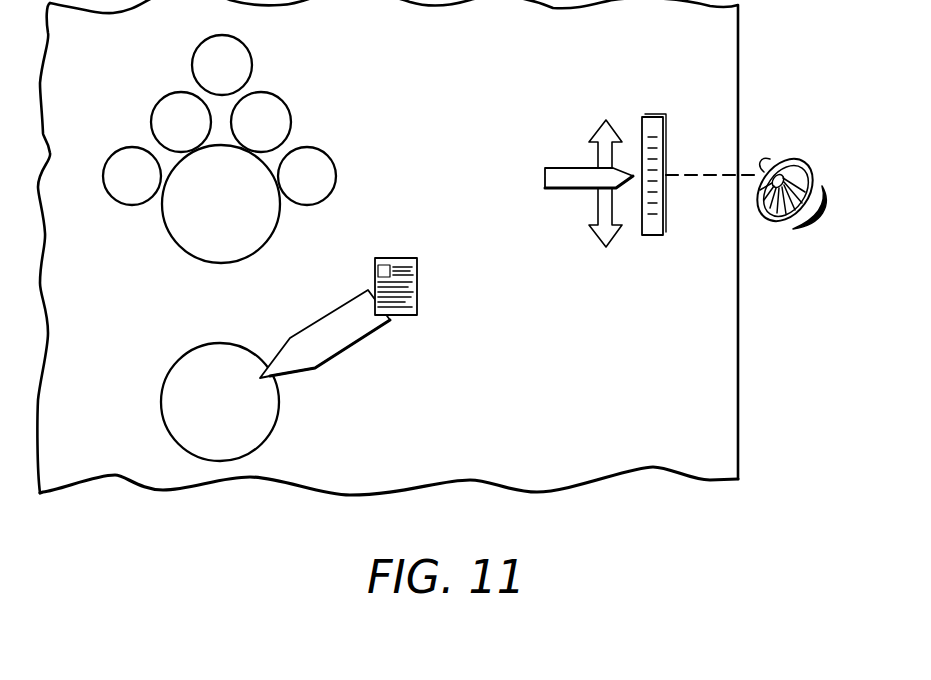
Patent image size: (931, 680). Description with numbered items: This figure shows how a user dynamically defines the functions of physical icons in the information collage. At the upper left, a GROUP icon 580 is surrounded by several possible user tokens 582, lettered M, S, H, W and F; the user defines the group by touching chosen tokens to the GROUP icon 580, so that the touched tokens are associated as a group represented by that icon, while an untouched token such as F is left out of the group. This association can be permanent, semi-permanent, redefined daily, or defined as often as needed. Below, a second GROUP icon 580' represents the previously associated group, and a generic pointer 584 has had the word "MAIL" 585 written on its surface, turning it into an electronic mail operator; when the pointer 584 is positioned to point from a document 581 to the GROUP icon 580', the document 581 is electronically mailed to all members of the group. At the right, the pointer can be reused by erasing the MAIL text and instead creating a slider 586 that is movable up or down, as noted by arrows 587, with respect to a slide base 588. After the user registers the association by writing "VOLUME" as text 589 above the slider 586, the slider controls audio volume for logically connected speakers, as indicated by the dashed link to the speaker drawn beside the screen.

The GROUP icon 580 is at (211, 222).
The GROUP icon 580' is at (206, 393).
The document 581 is at (400, 262).
The user tokens 582 is at (158, 88).
The generic pointer 584 is at (290, 376).
The word "MAIL" 585 is at (332, 325).
The slider 586 is at (548, 175).
The arrows 587 is at (597, 210).
The slide base 588 is at (665, 223).
The text "VOLUME" 589 is at (617, 113).